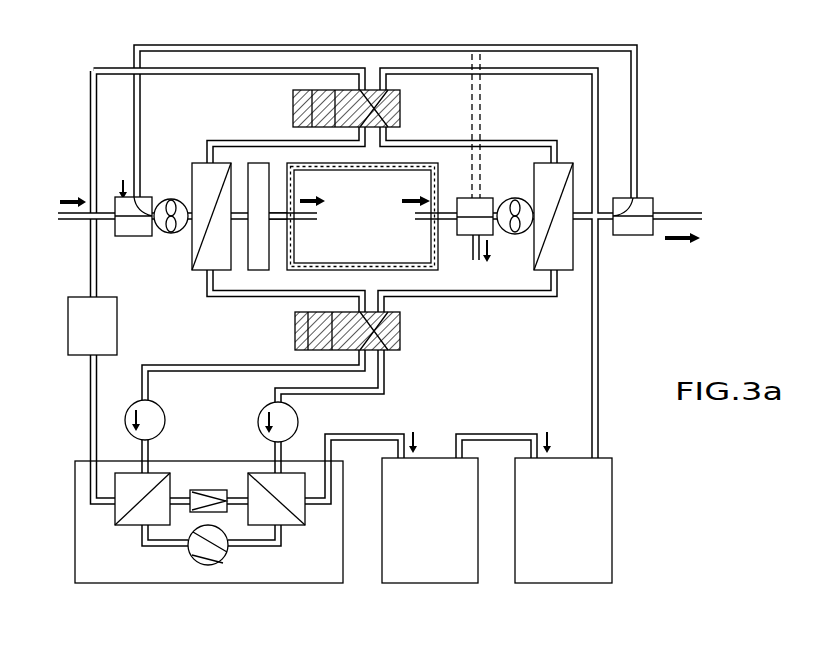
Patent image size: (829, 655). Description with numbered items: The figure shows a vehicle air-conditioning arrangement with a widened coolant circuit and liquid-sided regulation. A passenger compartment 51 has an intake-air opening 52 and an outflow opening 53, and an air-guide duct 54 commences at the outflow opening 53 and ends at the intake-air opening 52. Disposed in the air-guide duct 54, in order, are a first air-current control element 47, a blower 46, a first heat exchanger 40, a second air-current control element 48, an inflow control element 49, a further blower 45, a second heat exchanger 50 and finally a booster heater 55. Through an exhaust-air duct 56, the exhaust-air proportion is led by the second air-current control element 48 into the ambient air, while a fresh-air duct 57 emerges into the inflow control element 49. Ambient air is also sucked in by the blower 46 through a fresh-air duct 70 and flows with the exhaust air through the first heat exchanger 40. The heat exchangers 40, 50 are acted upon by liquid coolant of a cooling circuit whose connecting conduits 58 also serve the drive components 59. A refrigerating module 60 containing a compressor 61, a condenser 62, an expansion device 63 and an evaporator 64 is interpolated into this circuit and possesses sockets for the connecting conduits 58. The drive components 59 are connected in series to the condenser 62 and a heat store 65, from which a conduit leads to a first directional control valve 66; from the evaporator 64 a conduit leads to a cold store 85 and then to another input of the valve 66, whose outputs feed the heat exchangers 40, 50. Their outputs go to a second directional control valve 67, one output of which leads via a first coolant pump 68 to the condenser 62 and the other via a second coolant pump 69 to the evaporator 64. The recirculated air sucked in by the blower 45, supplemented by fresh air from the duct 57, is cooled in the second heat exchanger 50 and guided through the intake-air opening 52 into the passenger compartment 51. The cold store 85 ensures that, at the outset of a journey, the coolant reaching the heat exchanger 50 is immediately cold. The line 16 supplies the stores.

The air-guide duct 54 is at (128, 48).
The connecting conduits 58 is at (90, 158).
The fresh-air duct 57 is at (72, 221).
The exhaust-air duct 56 is at (688, 212).
The intake-air opening 52 is at (300, 228).
The outflow opening 53 is at (428, 228).
The fresh-air duct 70 is at (472, 250).
The supply line 16 is at (516, 428).
The refrigerating module 60 is at (275, 587).
The cold store 85 is at (68, 317).
The inflow control element 49 is at (135, 237).
The further blower 45 is at (167, 236).
The second heat exchanger 50 is at (200, 163).
The booster heater 55 is at (258, 163).
The passenger compartment 51 is at (376, 212).
The first air-current control element 47 is at (490, 200).
The blower 46 is at (506, 236).
The first heat exchanger 40 is at (565, 272).
The second air-current control element 48 is at (638, 237).
The first directional control valve 66 is at (400, 106).
The second directional control valve 67 is at (400, 330).
The second coolant pump 69 is at (164, 412).
The first coolant pump 68 is at (298, 415).
The evaporator 64 is at (135, 520).
The condenser 62 is at (293, 525).
The expansion device 63 is at (205, 490).
The compressor 61 is at (214, 566).
The drive components 59 is at (444, 532).
The heat store 65 is at (577, 532).